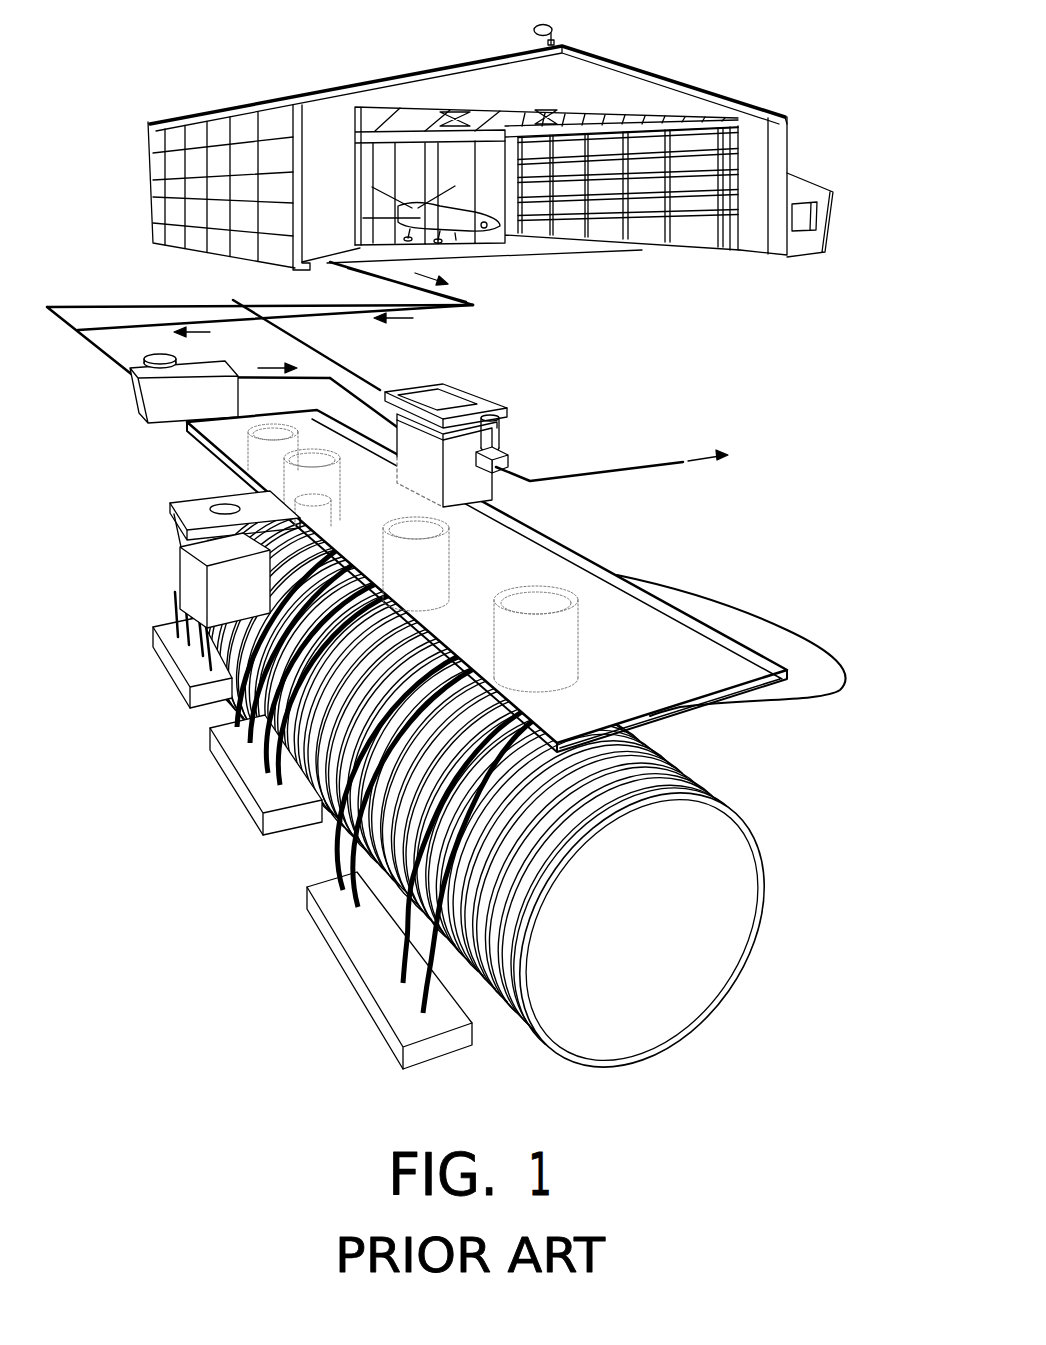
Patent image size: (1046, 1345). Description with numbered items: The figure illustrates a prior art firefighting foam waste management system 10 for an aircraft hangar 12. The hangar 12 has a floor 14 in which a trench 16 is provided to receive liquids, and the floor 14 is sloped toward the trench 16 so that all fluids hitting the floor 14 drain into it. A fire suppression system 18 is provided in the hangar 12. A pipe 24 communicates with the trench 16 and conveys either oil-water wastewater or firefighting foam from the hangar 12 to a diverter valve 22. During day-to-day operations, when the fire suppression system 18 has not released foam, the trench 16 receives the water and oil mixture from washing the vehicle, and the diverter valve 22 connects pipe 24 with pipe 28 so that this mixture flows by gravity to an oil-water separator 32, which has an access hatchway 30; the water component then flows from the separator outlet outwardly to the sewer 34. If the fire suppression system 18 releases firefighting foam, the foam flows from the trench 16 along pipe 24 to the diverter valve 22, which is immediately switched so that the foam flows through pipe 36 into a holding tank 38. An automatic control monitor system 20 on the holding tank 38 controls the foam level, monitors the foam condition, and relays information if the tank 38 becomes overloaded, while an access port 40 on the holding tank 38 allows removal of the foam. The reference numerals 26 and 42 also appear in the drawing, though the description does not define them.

The system 10 is at (752, 66).
The aircraft hangar 12 is at (787, 143).
The floor 14 is at (553, 240).
The trench 16 is at (510, 260).
The fire suppression system 18 is at (447, 108).
The automatic control monitor system 20 is at (190, 246).
The diverter valve 22 is at (138, 397).
The pipe 24 is at (433, 308).
The containment pad 26 is at (195, 306).
The pipe 28 is at (312, 378).
The access hatchway 30 is at (462, 397).
The oil-water separator 32 is at (498, 436).
The sewer 34 is at (640, 463).
The pipe 36 is at (203, 442).
The holding tank 38 is at (740, 797).
The access port 40 is at (290, 487).
The pump unit 42 is at (178, 606).